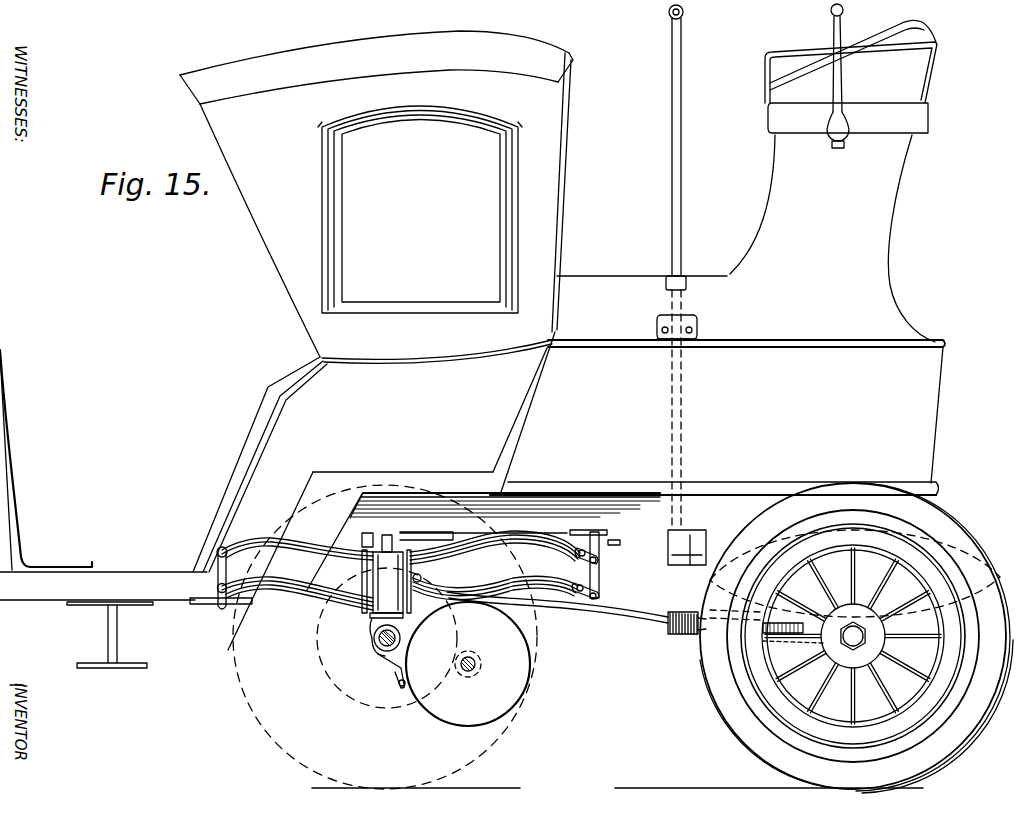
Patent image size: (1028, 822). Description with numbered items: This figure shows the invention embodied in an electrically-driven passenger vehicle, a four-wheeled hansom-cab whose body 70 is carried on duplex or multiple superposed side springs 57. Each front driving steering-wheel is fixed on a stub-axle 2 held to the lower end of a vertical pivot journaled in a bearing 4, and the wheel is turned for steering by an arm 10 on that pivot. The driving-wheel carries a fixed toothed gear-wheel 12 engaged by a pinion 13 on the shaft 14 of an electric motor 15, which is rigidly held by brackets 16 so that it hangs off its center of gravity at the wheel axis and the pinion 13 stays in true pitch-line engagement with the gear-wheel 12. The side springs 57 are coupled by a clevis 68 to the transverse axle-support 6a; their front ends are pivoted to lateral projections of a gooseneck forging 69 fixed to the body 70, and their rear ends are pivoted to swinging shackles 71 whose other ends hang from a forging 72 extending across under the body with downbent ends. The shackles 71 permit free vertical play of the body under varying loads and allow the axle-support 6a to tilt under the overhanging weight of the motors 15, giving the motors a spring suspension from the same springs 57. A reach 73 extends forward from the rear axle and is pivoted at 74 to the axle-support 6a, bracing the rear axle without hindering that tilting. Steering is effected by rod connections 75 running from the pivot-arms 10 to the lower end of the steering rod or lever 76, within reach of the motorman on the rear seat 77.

The stub-axle 2 is at (373, 640).
The bearing 4 is at (380, 603).
The transverse axle-support 6a is at (335, 592).
The arm 10 is at (400, 532).
The toothed gear-wheel 12 is at (328, 671).
The pinion 13 is at (478, 656).
The shaft 14 is at (462, 674).
The motor 15 is at (468, 664).
The brackets 16 is at (400, 667).
The side springs 57 is at (303, 540).
The clevis 68 is at (363, 548).
The gooseneck forging 69 is at (218, 580).
The body 70 is at (930, 410).
The swinging shackles 71 is at (580, 557).
The forging 72 is at (599, 573).
The reach 73 is at (640, 618).
The pivot 74 is at (433, 578).
The rod connections 75 is at (447, 540).
The steering rod or lever 76 is at (670, 143).
The rear seat 77 is at (851, 76).